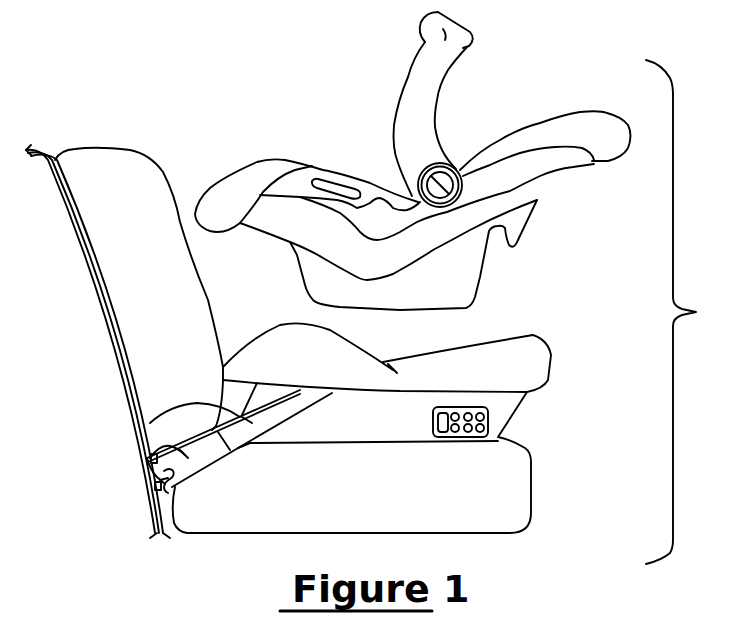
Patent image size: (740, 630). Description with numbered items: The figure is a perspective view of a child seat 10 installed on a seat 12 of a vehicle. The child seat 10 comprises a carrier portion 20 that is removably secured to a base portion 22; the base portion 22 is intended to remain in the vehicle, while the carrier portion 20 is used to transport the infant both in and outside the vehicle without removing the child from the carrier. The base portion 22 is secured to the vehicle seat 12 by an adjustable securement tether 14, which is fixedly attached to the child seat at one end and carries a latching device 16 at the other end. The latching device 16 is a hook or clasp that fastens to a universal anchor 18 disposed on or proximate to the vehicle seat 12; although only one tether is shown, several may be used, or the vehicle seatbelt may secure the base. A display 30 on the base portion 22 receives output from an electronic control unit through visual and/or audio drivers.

The child seat 10 is at (688, 312).
The vehicle seat 12 is at (143, 288).
The adjustable securement tether 14 is at (153, 421).
The latching device 16 is at (163, 447).
The universal anchor 18 is at (158, 491).
The carrier portion 20 is at (543, 208).
The base portion 22 is at (544, 396).
The display 30 is at (488, 420).